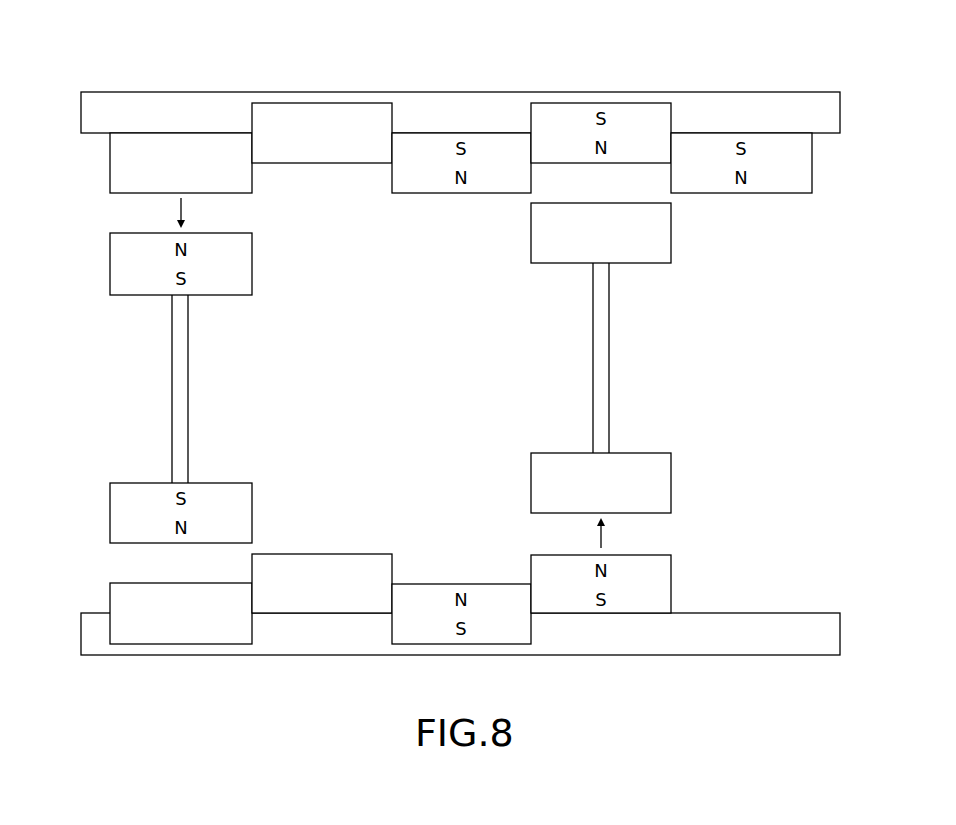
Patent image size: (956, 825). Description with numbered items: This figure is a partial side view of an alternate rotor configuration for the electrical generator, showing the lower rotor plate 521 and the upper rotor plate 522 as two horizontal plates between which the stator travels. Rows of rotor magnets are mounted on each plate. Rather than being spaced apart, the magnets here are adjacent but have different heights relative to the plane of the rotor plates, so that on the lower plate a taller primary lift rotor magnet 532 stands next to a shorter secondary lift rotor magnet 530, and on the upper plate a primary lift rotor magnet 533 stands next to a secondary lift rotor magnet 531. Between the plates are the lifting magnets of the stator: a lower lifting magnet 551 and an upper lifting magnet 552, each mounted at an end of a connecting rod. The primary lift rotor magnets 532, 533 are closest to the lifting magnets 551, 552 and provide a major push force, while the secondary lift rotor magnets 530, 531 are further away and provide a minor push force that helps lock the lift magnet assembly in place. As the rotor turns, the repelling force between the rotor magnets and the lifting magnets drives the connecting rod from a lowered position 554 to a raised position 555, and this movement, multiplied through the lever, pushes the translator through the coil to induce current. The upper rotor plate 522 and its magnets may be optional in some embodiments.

The lower rotor plate 521 is at (717, 648).
The upper rotor plate 522 is at (742, 102).
The secondary lift rotor magnet 530 is at (120, 597).
The secondary lift rotor magnet 531 is at (347, 158).
The primary lift rotor magnet 532 is at (350, 558).
The primary lift rotor magnet 533 is at (123, 157).
The lower lifting magnet 551 is at (525, 490).
The upper lifting magnet 552 is at (532, 275).
The lowered position 554 is at (642, 363).
The raised position 555 is at (212, 395).